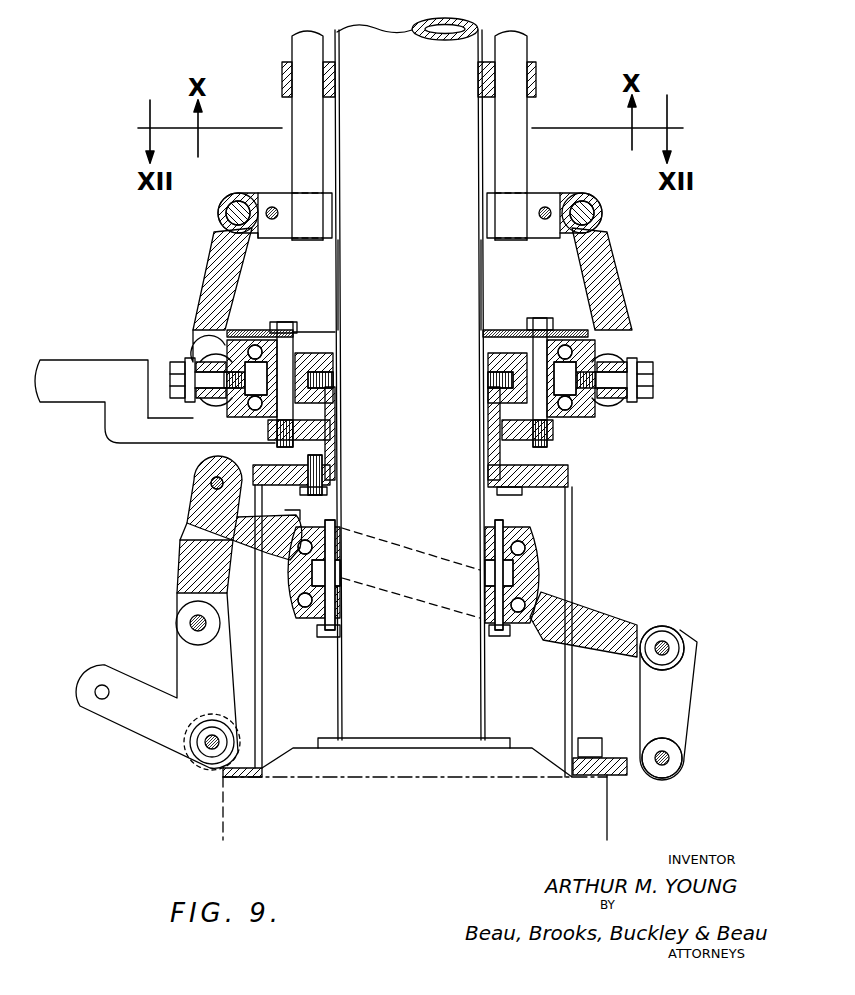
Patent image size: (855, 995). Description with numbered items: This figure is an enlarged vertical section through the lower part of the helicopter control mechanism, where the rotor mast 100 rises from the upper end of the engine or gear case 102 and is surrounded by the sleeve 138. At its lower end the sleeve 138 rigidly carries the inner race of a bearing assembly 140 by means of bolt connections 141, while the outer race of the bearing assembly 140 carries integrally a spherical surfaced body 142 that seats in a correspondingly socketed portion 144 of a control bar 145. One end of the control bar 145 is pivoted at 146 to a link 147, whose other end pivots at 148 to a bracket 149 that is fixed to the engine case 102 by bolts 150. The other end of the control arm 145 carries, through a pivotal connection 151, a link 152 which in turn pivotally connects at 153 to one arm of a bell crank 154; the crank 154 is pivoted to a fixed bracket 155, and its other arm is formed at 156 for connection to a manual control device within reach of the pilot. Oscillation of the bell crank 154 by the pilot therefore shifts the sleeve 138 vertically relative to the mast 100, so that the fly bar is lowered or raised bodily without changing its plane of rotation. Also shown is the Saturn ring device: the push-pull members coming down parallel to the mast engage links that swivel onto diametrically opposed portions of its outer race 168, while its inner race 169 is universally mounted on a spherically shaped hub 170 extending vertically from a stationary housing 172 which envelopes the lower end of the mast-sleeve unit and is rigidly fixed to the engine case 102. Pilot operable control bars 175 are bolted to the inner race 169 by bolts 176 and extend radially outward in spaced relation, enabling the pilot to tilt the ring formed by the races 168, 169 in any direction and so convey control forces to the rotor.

The mast 100 is at (357, 662).
The engine or gear case 102 is at (415, 794).
The sleeve 138 is at (485, 263).
The bearing assembly 140 is at (313, 618).
The bolt connections 141 is at (337, 613).
The spherical surfaced body 142 is at (332, 570).
The socketed portion 144 is at (547, 600).
The control bar 145 is at (630, 627).
The pivot 146 is at (667, 647).
The link 147 is at (675, 722).
The pivot 148 is at (667, 765).
The bracket 149 is at (620, 777).
The bolts 150 is at (590, 747).
The pivotal connection 151 is at (210, 483).
The link 152 is at (180, 577).
The pivotal connection 153 is at (190, 623).
The bell crank 154 is at (187, 672).
The fixed bracket 155 is at (242, 762).
The crank arm connection 156 is at (102, 699).
The outer race 168 is at (587, 417).
The inner race 169 is at (267, 333).
The spherically shaped hub 170 is at (303, 353).
The stationary housing 172 is at (550, 480).
The pilot operable control bar 175 is at (73, 368).
The bolts 176 is at (538, 320).